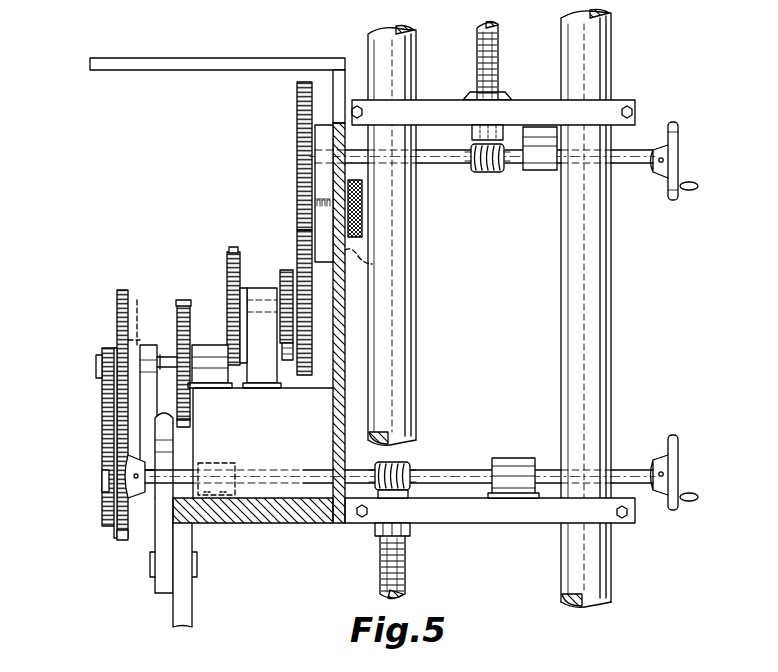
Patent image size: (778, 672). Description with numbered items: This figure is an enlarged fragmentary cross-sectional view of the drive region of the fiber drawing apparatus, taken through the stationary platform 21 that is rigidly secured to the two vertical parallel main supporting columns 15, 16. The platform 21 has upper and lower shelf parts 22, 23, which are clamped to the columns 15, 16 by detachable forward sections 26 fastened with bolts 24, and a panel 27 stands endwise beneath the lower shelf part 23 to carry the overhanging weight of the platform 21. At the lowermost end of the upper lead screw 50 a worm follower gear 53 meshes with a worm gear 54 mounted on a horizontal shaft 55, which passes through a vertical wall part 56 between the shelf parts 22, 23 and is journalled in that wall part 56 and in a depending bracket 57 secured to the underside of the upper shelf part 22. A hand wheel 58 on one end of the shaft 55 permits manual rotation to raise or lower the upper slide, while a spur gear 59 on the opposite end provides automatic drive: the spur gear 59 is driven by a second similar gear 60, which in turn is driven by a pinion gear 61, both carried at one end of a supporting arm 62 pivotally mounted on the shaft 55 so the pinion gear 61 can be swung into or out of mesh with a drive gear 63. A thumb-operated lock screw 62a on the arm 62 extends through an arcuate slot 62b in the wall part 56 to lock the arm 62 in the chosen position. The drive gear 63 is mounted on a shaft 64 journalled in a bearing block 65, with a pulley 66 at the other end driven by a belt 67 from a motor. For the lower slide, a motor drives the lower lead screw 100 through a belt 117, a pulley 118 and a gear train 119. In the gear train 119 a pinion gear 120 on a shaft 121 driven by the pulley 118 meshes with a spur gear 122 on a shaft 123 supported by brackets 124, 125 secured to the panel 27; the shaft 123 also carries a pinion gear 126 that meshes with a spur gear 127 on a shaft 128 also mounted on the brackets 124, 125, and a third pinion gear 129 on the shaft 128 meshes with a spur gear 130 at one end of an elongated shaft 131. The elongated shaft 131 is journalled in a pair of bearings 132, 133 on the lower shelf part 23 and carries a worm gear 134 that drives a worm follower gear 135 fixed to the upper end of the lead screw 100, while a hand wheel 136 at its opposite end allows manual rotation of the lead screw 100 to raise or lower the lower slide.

The main supporting column 15 is at (405, 297).
The main supporting column 16 is at (572, 284).
The stationary platform 21 is at (279, 529).
The upper shelf part 22 is at (438, 104).
The lower shelf part 23 is at (223, 518).
The bolt 24 is at (357, 104).
The detachable forward section 26 is at (530, 105).
The panel 27 is at (185, 606).
The lead screw 50 is at (498, 60).
The worm follower gear 53 is at (479, 168).
The worm gear 54 is at (493, 168).
The shaft 55 is at (437, 165).
The vertical wall part 56 is at (338, 383).
The depending bracket 57 is at (546, 172).
The hand wheel 58 is at (680, 140).
The spur gear 59 is at (297, 120).
The second spur gear 60 is at (302, 240).
The pinion gear 61 is at (292, 356).
The supporting arm 62 is at (322, 127).
The thumb-operated lock screw 62a is at (356, 228).
The arcuate slot 62b is at (377, 262).
The drive gear 63 is at (287, 270).
The shaft 64 is at (243, 290).
The bearing block 65 is at (262, 296).
The pulley 66 is at (228, 266).
The belt 67 is at (233, 248).
The lead screw 100 is at (398, 558).
The belt 117 is at (185, 306).
The pulley 118 is at (178, 300).
The gear train 119 is at (94, 434).
The pinion gear 120 is at (146, 313).
The shaft 121 is at (160, 358).
The spur gear 122 is at (122, 290).
The shaft 123 is at (98, 368).
The bracket 124 is at (150, 438).
The bracket 125 is at (158, 556).
The pinion gear 126 is at (104, 348).
The spur gear 127 is at (102, 482).
The shaft 128 is at (184, 426).
The third pinion gear 129 is at (116, 462).
The spur gear 130 is at (126, 540).
The elongated shaft 131 is at (158, 478).
The bearing 132 is at (230, 463).
The bearing 133 is at (512, 460).
The worm gear 134 is at (398, 466).
The worm follower gear 135 is at (412, 484).
The hand wheel 136 is at (680, 462).